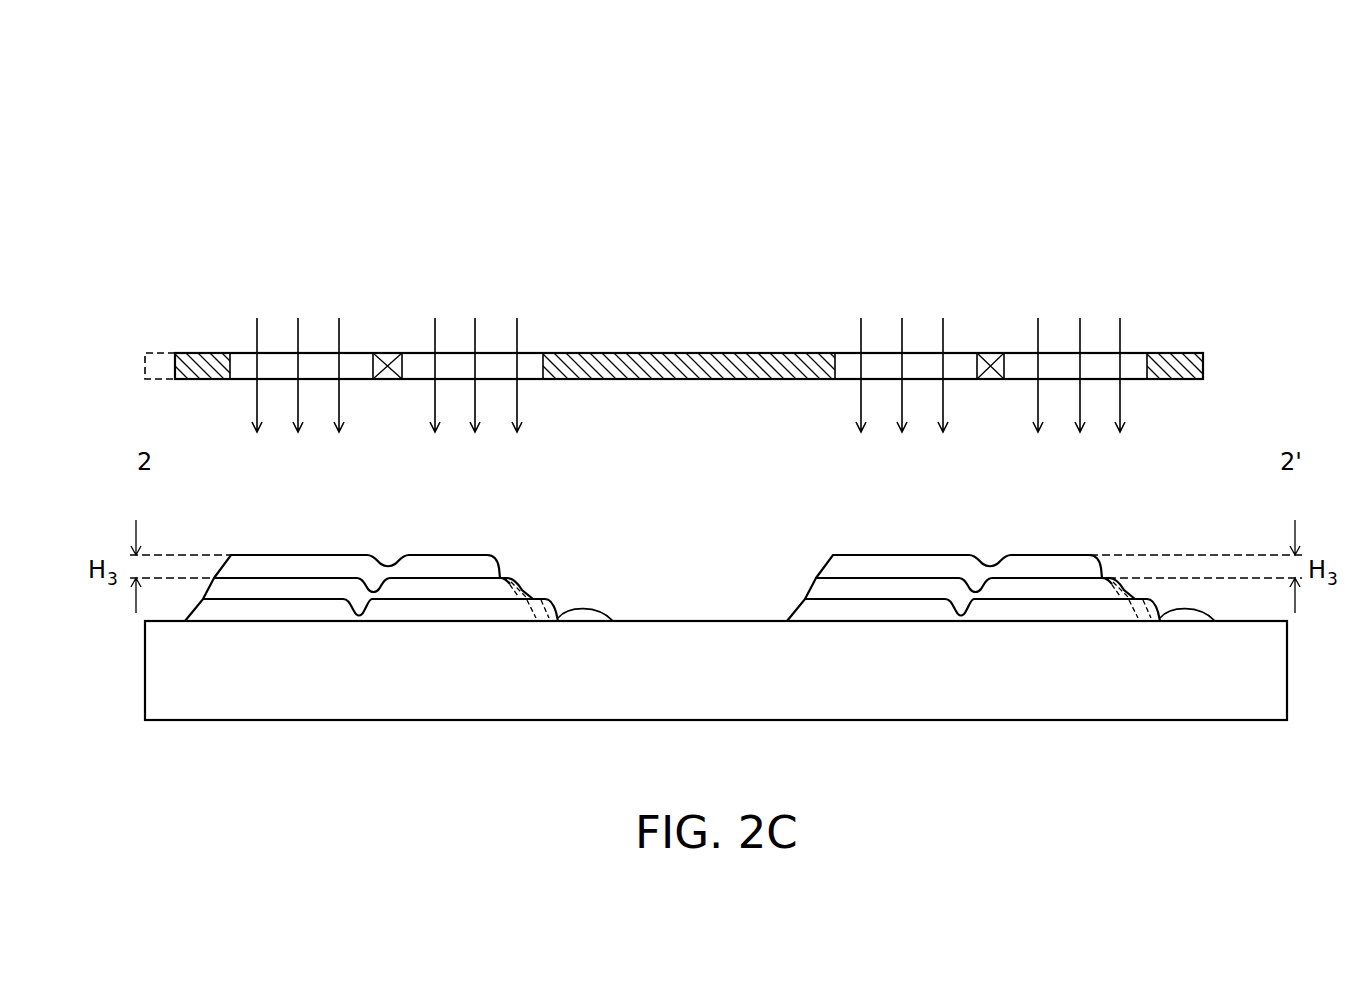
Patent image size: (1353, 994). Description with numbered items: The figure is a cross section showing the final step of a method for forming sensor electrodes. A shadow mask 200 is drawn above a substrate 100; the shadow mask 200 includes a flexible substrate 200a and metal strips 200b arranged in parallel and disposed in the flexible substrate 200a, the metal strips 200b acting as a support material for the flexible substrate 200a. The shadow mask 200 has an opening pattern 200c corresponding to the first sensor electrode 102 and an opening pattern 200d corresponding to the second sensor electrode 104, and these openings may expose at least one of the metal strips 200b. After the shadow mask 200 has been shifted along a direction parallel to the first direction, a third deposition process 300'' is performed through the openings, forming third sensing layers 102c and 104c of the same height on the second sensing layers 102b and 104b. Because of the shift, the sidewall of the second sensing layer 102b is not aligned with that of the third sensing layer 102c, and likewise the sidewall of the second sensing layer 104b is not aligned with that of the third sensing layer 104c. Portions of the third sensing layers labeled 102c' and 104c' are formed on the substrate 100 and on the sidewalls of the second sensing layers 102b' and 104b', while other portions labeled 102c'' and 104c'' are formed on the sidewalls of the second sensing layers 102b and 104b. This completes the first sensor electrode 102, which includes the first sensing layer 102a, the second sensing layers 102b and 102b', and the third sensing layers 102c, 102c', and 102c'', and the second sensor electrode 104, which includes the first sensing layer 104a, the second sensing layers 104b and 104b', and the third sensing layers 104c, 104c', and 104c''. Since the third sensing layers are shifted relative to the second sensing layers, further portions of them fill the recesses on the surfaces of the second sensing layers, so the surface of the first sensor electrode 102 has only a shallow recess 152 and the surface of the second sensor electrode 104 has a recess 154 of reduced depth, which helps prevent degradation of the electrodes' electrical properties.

The substrate 100 is at (739, 687).
The first sensor electrode 102 is at (575, 78).
The first sensing layer 102a is at (413, 752).
The second sensing layer 102b is at (421, 447).
The third sensing layer 102c is at (423, 460).
The second sensing layer 102b' is at (575, 474).
The third sensing layer portion 102c' is at (598, 488).
The third sensing layer portion 102c'' is at (575, 405).
The second sensor electrode 104 is at (866, 78).
The first sensing layer 104a is at (1015, 752).
The second sensing layer 104b is at (970, 447).
The third sensing layer 104c is at (957, 460).
The second sensing layer 104b' is at (1024, 474).
The third sensing layer portion 104c' is at (1069, 488).
The third sensing layer portion 104c'' is at (990, 405).
The recess 152 is at (395, 547).
The recess 154 is at (997, 547).
The shadow mask 200 is at (1196, 105).
The flexible substrate 200a is at (196, 360).
The metal strips 200b is at (387, 358).
The opening pattern 200c is at (285, 346).
The opening pattern 200d is at (1103, 346).
The third deposition process 300'' is at (688, 375).